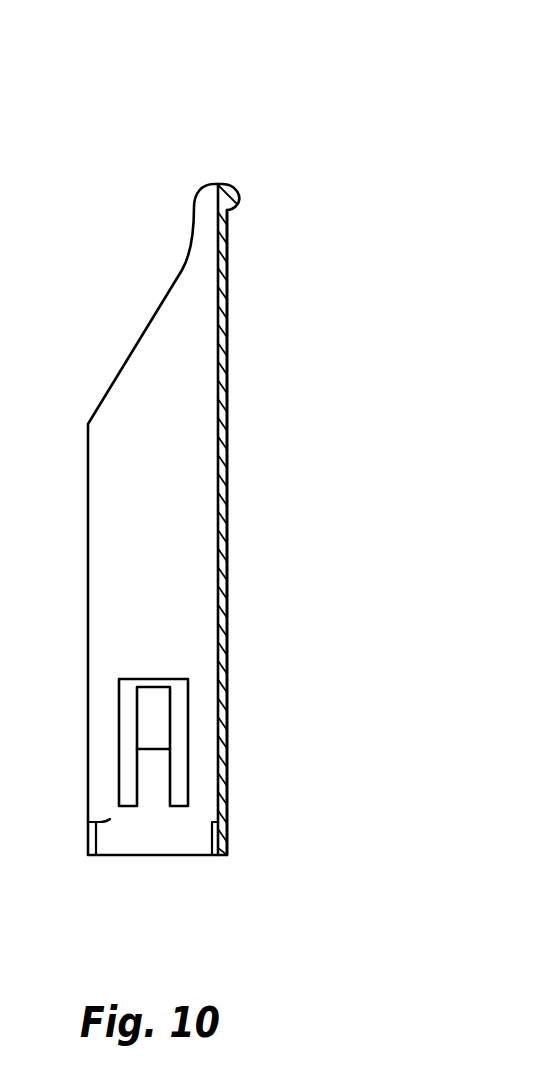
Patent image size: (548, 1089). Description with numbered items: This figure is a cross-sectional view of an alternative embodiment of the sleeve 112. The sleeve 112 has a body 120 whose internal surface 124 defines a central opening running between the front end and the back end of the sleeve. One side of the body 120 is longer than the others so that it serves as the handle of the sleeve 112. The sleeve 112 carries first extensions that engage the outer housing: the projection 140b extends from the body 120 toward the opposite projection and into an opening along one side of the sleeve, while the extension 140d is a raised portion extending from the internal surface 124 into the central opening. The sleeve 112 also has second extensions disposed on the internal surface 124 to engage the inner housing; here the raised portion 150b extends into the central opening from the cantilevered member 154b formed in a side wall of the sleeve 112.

The sleeve 112 is at (251, 133).
The body 120 is at (228, 300).
The internal surface 124 is at (198, 437).
The raised portion 150b is at (150, 715).
The cantilevered member 154b is at (157, 783).
The projection 140b is at (93, 855).
The extension 140d is at (217, 855).